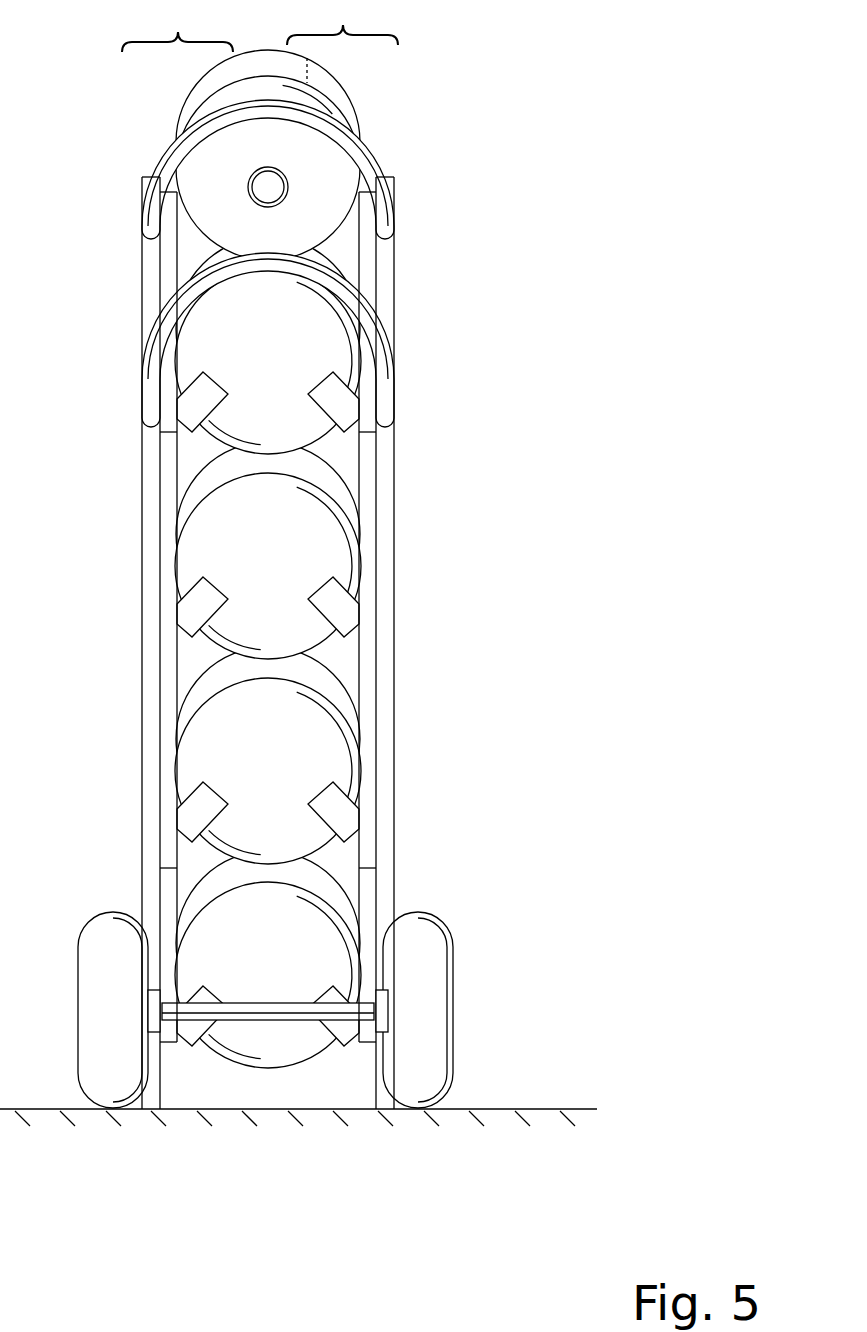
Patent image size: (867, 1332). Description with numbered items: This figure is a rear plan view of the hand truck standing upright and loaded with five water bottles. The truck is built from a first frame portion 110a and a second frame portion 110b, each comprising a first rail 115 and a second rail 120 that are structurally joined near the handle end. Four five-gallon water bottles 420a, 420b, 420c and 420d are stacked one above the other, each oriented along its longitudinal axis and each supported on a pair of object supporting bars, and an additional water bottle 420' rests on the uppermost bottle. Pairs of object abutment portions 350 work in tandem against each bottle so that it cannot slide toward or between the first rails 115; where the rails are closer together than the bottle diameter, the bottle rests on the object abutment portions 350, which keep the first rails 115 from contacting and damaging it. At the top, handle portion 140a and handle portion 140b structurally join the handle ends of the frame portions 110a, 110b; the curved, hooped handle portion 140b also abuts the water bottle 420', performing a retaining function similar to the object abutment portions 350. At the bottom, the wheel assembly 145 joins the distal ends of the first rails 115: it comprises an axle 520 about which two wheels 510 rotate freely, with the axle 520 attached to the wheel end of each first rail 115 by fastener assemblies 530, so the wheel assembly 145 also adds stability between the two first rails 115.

The first frame portion 110a is at (342, 24).
The second frame portion 110b is at (177, 29).
The first rail 115 is at (165, 755).
The second rail 120 is at (150, 690).
The handle portion 140a is at (183, 283).
The handle portion 140b is at (174, 142).
The wheel assembly 145 is at (462, 932).
The object abutment portion 350 is at (190, 407).
The water bottle 420' is at (268, 155).
The water bottle 420a is at (268, 345).
The water bottle 420b is at (268, 550).
The water bottle 420c is at (268, 755).
The water bottle 420d is at (268, 959).
The wheel 510 is at (97, 968).
The axle 520 is at (273, 1012).
The fastener assembly 530 is at (156, 1032).